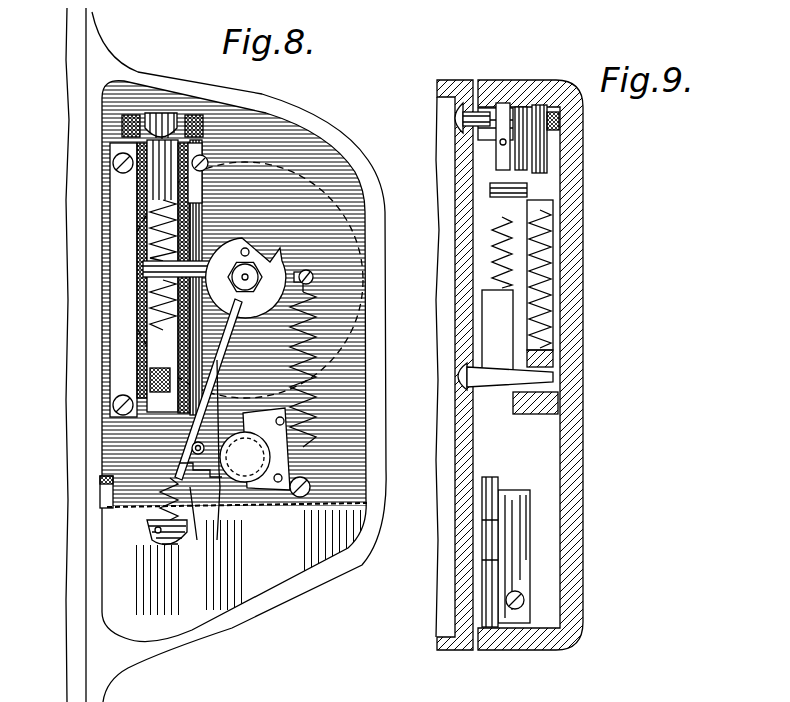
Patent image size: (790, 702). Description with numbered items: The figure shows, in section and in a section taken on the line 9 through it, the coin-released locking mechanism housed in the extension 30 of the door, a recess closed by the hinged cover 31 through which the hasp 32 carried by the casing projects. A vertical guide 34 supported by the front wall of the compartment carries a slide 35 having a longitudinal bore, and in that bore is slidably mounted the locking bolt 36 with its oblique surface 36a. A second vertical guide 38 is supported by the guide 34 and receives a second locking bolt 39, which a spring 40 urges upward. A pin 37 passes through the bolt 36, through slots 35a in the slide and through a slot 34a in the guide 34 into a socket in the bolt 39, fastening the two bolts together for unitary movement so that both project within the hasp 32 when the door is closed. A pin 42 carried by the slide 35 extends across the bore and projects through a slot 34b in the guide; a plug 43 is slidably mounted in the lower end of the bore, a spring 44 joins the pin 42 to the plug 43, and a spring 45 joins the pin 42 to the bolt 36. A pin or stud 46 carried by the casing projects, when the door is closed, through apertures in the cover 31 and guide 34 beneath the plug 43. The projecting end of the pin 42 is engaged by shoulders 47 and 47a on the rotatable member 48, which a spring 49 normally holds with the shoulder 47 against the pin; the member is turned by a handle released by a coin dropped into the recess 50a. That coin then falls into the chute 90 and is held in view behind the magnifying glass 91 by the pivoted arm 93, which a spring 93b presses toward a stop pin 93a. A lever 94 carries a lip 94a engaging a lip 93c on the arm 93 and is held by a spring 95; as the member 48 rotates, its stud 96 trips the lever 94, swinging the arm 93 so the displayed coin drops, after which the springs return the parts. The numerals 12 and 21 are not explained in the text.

In FIG. 8, the section line 9— 9 is at (160, 112).
In FIG. 9, the section line 12- 12 is at (447, 185).
In FIG. 9, the panel 21 is at (472, 547).
In FIG. 9, the extension 30 is at (570, 478).
In FIG. 8, the hinged cover 31 is at (292, 580).
In FIG. 9, the hinged cover 31 is at (478, 447).
In FIG. 8, the hasp 32 is at (206, 127).
In FIG. 9, the hasp 32 is at (557, 120).
In FIG. 8, the vertical guide 34 is at (133, 177).
In FIG. 9, the slot 34a is at (490, 216).
In FIG. 8, the slot 34b is at (147, 327).
In FIG. 8, the slide 35 is at (190, 235).
In FIG. 9, the slide 35 is at (550, 300).
In FIG. 9, the slots 35a is at (553, 207).
In FIG. 8, the locking bolt 36 is at (140, 130).
In FIG. 9, the locking bolt 36 is at (543, 160).
In FIG. 9, the oblique surface 36a is at (543, 130).
In FIG. 9, the pin 37 is at (525, 137).
In FIG. 9, the vertical guide 38 is at (490, 168).
In FIG. 9, the second locking bolt 39 is at (500, 138).
In FIG. 9, the spring 40 is at (498, 253).
In FIG. 8, the pin 42 is at (200, 257).
In FIG. 9, the pin 42 is at (547, 265).
In FIG. 8, the plug 43 is at (150, 370).
In FIG. 9, the plug 43 is at (550, 358).
In FIG. 8, the spring 44 is at (183, 270).
In FIG. 9, the spring 44 is at (550, 310).
In FIG. 8, the spring 45 is at (150, 216).
In FIG. 9, the spring 45 is at (530, 230).
In FIG. 8, the pin or stud 46 is at (133, 384).
In FIG. 9, the pin or stud 46 is at (482, 412).
In FIG. 8, the shoulder 47 is at (228, 312).
In FIG. 8, the shoulder 47a is at (282, 252).
In FIG. 8, the rotatable member 48 is at (330, 262).
In FIG. 8, the spring 49 is at (300, 320).
In FIG. 8, the recess 50a is at (250, 212).
In FIG. 8, the chute 90 is at (237, 522).
In FIG. 8, the magnifying glass 91 is at (265, 448).
In FIG. 8, the pivoted arm 93 is at (204, 426).
In FIG. 8, the stop pin 93a is at (191, 448).
In FIG. 8, the spring 93b is at (182, 466).
In FIG. 8, the lip 93c is at (197, 522).
In FIG. 8, the lever 94 is at (230, 345).
In FIG. 8, the lip 94a is at (222, 530).
In FIG. 8, the spring 95 is at (147, 532).
In FIG. 8, the stud 96 is at (250, 250).